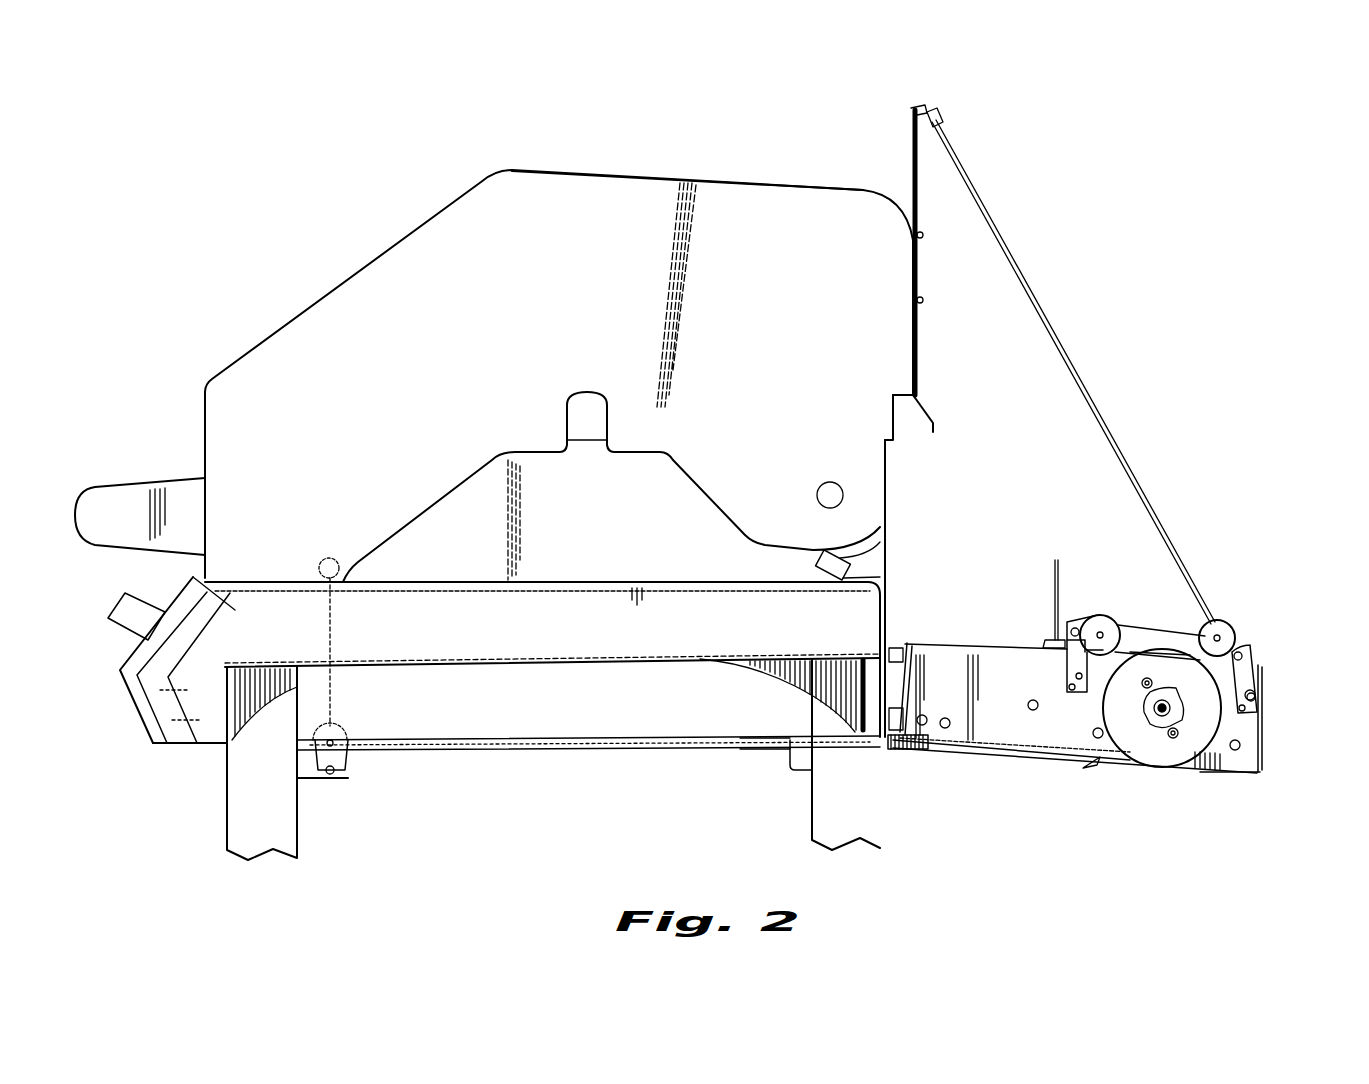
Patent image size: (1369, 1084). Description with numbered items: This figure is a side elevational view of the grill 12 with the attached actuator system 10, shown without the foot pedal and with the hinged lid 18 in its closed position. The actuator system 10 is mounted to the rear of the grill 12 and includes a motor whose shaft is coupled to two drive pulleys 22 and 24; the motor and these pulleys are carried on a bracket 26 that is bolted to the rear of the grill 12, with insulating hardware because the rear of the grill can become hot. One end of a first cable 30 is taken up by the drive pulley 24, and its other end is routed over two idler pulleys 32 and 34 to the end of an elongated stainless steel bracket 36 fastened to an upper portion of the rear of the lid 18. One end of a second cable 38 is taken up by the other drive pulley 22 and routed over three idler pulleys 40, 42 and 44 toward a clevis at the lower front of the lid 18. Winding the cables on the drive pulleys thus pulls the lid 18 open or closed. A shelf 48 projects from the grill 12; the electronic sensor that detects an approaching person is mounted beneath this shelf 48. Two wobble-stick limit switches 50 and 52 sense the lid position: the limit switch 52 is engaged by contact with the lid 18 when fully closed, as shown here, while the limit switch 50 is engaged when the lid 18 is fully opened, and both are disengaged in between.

The actuator system 10 is at (1086, 816).
The grill 12 is at (410, 196).
The hinged lid 18 is at (750, 193).
The drive pulley 22 is at (1180, 740).
The drive pulley 24 is at (1222, 713).
The bracket 26 is at (1017, 747).
The first cable 30 is at (1143, 472).
The idler pulley 32 is at (1098, 618).
The idler pulley 34 is at (1222, 632).
The elongated stainless steel bracket 36 is at (920, 108).
The second cable 38 is at (1075, 740).
The idler pulley 40 is at (903, 748).
The idler pulley 42 is at (747, 752).
The idler pulley 44 is at (350, 745).
The shelf 48 is at (207, 588).
The limit switch 50 is at (1050, 640).
The limit switch 52 is at (862, 558).